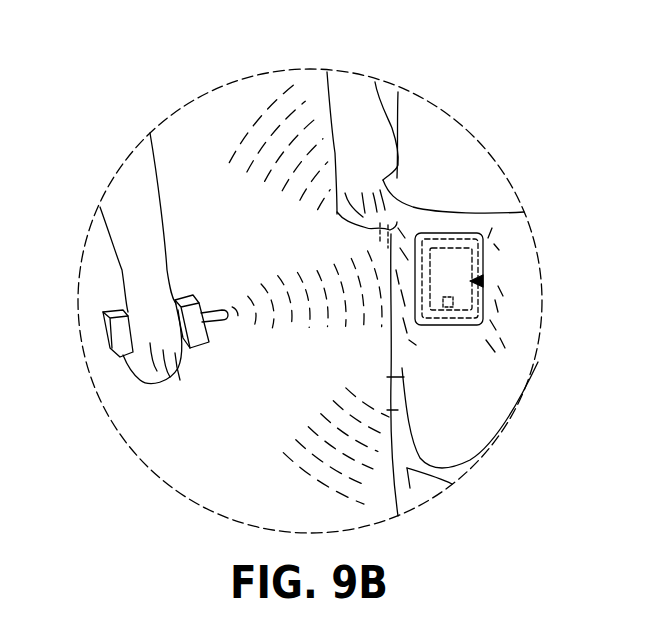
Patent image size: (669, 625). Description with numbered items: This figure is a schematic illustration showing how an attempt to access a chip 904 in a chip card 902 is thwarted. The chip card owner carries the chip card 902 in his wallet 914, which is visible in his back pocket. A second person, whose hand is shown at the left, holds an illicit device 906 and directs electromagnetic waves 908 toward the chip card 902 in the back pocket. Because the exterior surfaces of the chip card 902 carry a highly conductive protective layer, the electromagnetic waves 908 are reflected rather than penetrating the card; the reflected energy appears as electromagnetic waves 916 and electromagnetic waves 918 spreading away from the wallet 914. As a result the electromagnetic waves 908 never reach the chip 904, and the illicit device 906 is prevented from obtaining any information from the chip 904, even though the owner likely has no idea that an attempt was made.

The chip card 902 is at (483, 283).
The chip 904 is at (485, 318).
The illicit device 906 is at (113, 330).
The electromagnetic waves 908 is at (272, 286).
The wallet 914 is at (487, 247).
The electromagnetic waves 916 is at (264, 112).
The electromagnetic waves 918 is at (305, 488).